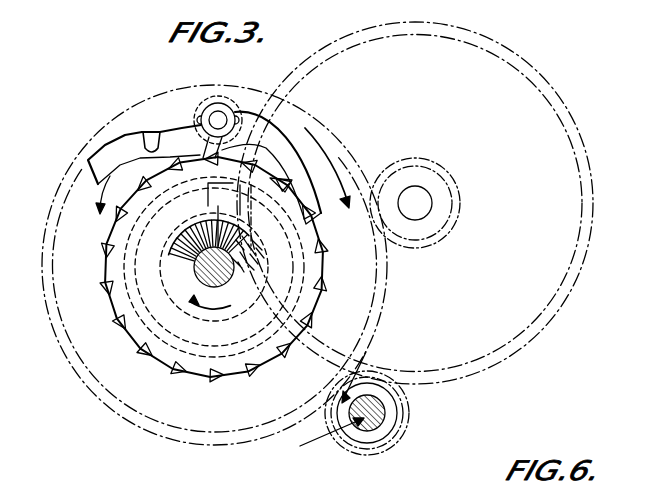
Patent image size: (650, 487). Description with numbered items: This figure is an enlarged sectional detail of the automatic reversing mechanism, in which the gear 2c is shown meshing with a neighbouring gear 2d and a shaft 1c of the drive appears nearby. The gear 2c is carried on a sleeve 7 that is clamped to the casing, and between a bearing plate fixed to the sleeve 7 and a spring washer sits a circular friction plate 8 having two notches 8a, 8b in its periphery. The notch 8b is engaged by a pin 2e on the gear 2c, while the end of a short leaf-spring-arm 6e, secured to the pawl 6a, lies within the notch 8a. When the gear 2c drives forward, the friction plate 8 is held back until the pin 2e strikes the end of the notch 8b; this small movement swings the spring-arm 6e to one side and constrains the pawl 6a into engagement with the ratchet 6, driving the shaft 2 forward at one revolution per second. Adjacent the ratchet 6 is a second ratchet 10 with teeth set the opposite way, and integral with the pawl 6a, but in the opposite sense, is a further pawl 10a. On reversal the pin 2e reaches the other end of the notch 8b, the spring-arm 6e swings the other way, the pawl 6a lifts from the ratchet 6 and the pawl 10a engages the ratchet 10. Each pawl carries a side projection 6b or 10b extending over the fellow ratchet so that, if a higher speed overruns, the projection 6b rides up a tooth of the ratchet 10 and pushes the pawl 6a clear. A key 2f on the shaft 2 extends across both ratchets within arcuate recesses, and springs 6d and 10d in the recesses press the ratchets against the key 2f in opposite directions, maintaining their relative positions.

The shaft of driving member 1c is at (390, 448).
The shaft 2 is at (186, 279).
The gear 2c is at (90, 396).
The second gear wheel 2d is at (458, 214).
The pin 2e is at (191, 323).
The feather or key 2f is at (229, 216).
The ratchet 6 is at (304, 247).
The pawl 6a is at (328, 160).
The side projection 6b is at (298, 124).
The spring 6d is at (174, 260).
The leaf-spring-arm 6e is at (204, 107).
The sleeve 7 is at (172, 247).
The circular friction plate 8 is at (140, 238).
The notch 8a is at (180, 234).
The notch 8b is at (233, 323).
The second ratchet 10 is at (106, 275).
The further pawl 10a is at (107, 148).
The side projection 10b is at (150, 141).
The spring 10d is at (304, 278).